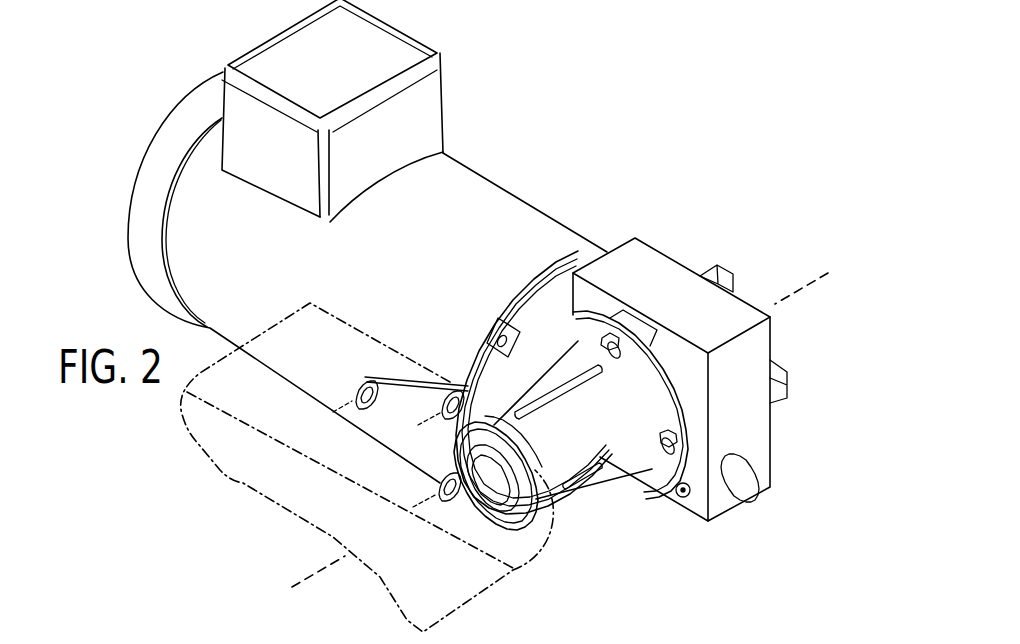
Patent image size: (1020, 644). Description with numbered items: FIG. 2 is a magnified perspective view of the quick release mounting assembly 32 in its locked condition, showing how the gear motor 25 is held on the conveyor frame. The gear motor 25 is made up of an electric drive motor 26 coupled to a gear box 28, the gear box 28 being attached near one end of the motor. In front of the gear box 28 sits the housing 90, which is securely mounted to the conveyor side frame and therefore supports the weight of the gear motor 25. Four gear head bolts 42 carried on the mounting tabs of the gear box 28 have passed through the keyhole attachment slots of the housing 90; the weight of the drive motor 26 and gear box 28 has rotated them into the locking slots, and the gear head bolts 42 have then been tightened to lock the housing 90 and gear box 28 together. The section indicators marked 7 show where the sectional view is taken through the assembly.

The drive assembly 25 is at (552, 198).
The motor 26 is at (468, 200).
The gearbox 28 is at (647, 273).
The mounting bracket 32 is at (582, 535).
The fastener 42 is at (677, 440).
The housing 90 is at (628, 445).
The section line 7- 7 is at (250, 563).